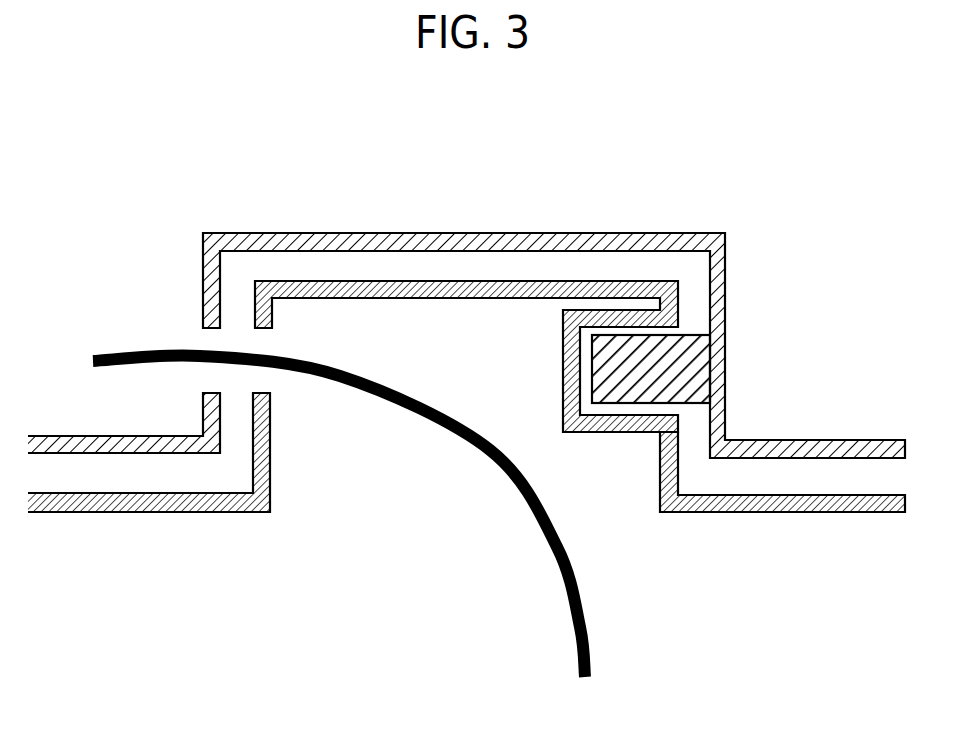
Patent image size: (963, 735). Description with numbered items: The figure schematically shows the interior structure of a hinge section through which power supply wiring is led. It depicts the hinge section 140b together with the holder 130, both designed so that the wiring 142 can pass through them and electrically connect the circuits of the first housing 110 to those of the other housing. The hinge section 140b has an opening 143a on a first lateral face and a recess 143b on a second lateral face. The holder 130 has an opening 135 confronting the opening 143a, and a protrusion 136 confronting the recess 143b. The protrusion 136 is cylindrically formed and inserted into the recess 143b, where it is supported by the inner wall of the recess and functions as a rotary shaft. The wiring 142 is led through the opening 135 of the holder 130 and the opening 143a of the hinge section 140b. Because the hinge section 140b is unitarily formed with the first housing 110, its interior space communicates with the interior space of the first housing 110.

The first housing 110 is at (828, 493).
The holder 130 is at (598, 245).
The opening 135 is at (218, 342).
The protrusion 136 is at (603, 395).
The hinge section 140b is at (438, 281).
The wiring 142 is at (585, 622).
The opening 143a is at (253, 347).
The recess 143b is at (660, 433).